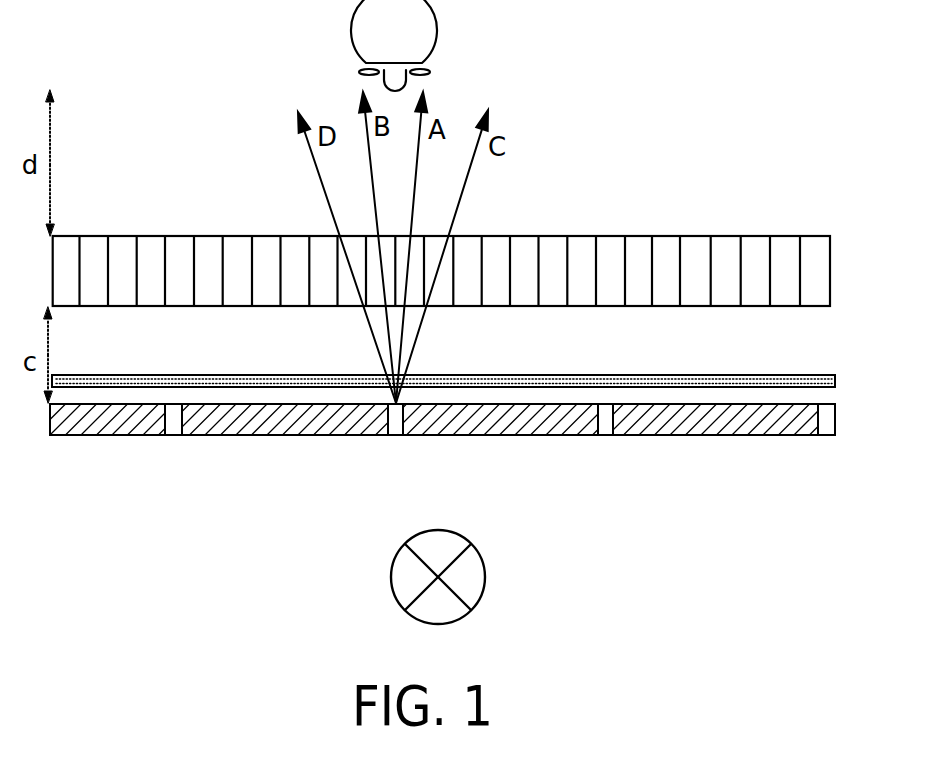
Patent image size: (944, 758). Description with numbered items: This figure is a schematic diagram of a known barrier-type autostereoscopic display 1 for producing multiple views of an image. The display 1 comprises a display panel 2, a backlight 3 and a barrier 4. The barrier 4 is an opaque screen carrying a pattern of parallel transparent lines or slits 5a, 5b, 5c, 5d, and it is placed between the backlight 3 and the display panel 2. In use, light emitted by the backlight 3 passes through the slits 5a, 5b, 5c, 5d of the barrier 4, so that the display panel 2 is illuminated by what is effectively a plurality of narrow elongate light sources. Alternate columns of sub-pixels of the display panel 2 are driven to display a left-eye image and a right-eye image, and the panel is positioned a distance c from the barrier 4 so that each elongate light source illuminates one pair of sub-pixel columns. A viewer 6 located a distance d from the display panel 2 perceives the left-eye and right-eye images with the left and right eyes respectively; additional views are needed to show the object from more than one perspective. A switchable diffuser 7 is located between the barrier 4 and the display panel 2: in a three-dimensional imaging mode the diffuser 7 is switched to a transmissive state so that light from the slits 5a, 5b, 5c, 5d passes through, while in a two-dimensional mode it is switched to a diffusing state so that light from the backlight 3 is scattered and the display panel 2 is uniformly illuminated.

The barrier-type autostereoscopic display 1 is at (752, 87).
The display panel 2 is at (660, 236).
The backlight 3 is at (486, 567).
The barrier 4 is at (72, 435).
The slit 5a is at (175, 435).
The slit 5b is at (396, 435).
The slit 5c is at (604, 435).
The slit 5d is at (826, 435).
The viewer 6 is at (438, 48).
The switchable diffuser 7 is at (808, 375).